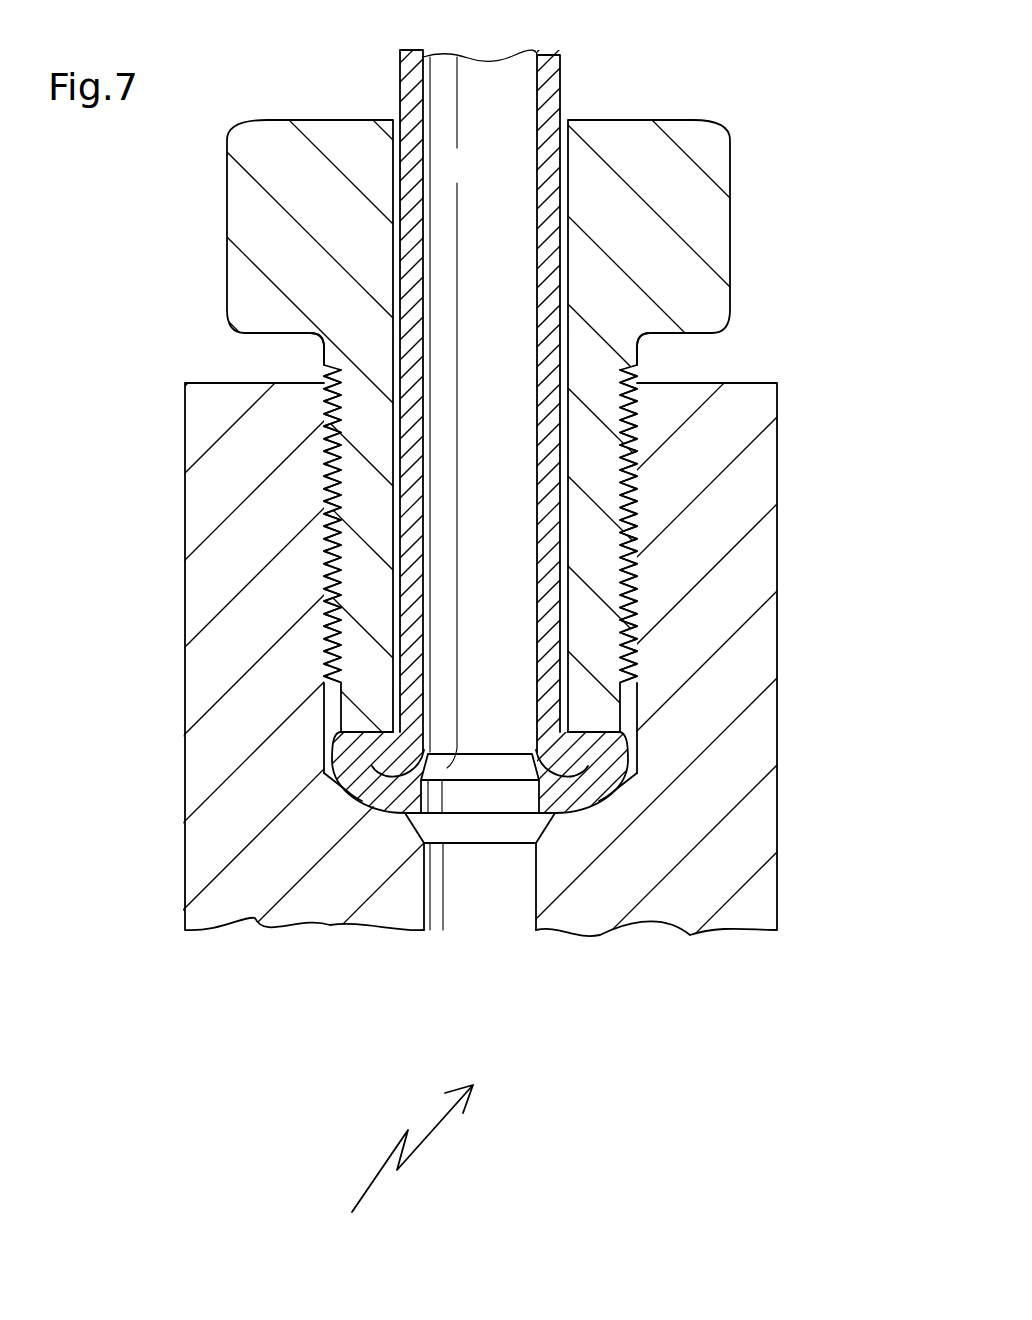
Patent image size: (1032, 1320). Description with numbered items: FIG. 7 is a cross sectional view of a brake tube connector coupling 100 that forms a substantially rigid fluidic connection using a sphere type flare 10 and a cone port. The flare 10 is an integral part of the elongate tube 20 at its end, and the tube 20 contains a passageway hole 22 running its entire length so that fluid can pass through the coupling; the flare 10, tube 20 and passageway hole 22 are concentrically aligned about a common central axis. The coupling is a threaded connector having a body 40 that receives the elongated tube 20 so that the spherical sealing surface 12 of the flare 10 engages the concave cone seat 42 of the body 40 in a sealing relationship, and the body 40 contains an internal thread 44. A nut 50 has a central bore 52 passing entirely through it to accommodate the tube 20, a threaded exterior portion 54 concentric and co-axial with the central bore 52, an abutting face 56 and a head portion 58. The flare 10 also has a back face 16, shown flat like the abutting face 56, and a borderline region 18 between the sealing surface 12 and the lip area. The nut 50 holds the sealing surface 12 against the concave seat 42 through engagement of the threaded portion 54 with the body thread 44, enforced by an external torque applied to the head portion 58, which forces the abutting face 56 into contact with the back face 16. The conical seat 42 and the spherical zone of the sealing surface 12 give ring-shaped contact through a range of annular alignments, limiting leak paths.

The flare 10 is at (625, 750).
The sealing surface 12 is at (612, 789).
The back face 16 is at (373, 731).
The borderline region 18 is at (343, 777).
The elongate tube 20 is at (418, 212).
The passageway hole 22 is at (505, 312).
The body 40 is at (750, 490).
The concave cone seat 42 is at (407, 846).
The internal thread 44 is at (331, 543).
The nut 50 is at (653, 120).
The central bore 52 is at (390, 157).
The threaded exterior portion 54 is at (327, 380).
The abutting face 56 is at (588, 729).
The head portion 58 is at (722, 217).
The brake tube connector coupling 100 is at (393, 1169).